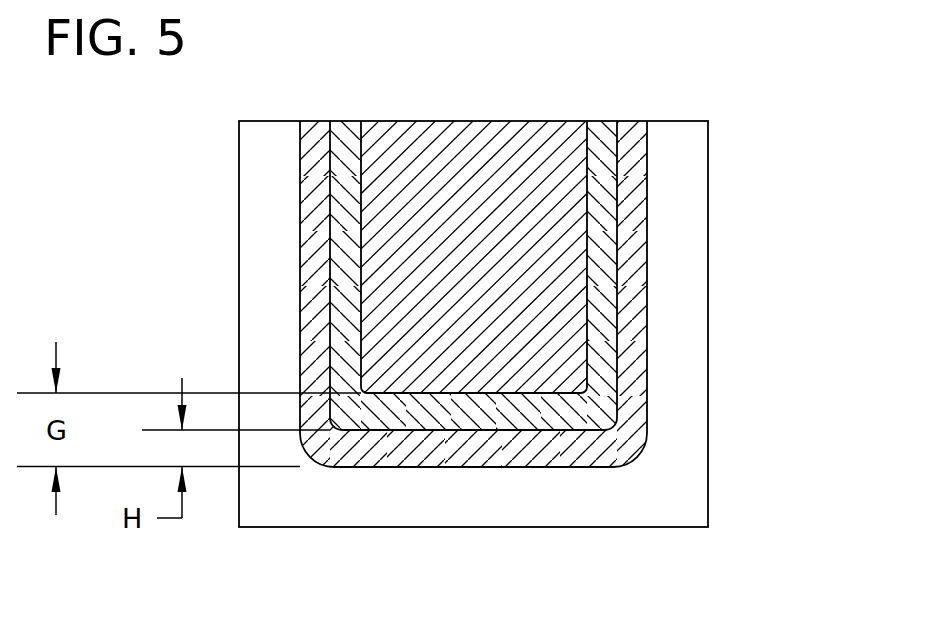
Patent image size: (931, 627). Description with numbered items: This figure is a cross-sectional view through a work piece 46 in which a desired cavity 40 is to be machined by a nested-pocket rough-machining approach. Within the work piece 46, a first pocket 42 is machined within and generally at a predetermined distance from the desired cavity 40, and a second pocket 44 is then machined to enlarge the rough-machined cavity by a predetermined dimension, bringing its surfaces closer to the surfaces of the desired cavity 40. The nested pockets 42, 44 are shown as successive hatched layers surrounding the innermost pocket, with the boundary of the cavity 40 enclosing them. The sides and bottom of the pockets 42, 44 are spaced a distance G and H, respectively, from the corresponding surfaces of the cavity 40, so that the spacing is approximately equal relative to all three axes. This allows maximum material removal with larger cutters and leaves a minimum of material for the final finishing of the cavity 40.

The pocket 42 is at (568, 185).
The pocket 44 is at (600, 281).
The cavity 40 is at (636, 378).
The work piece 46 is at (691, 527).